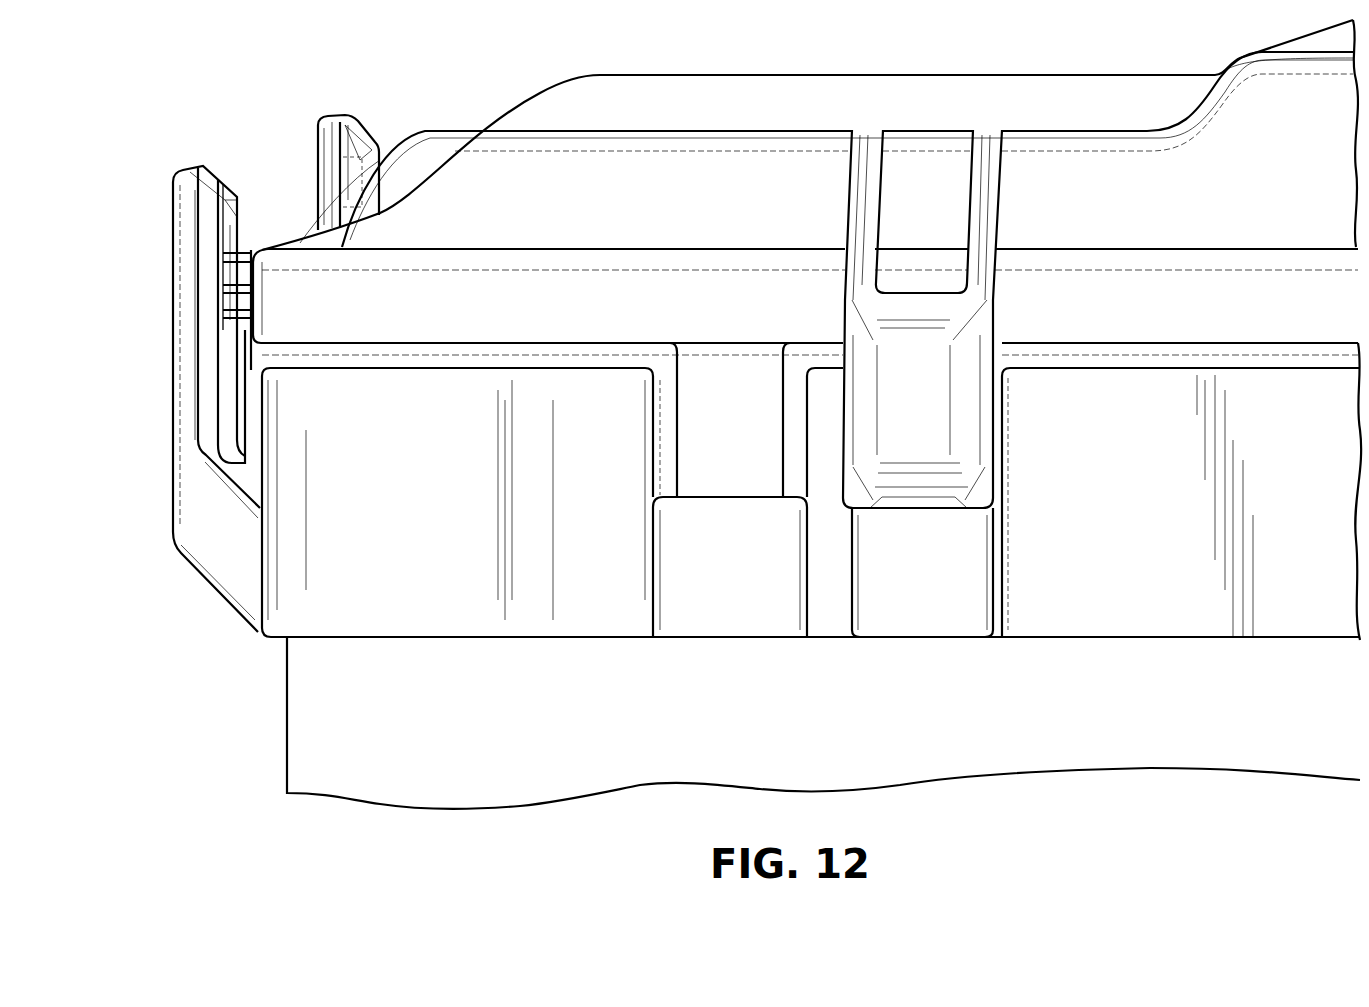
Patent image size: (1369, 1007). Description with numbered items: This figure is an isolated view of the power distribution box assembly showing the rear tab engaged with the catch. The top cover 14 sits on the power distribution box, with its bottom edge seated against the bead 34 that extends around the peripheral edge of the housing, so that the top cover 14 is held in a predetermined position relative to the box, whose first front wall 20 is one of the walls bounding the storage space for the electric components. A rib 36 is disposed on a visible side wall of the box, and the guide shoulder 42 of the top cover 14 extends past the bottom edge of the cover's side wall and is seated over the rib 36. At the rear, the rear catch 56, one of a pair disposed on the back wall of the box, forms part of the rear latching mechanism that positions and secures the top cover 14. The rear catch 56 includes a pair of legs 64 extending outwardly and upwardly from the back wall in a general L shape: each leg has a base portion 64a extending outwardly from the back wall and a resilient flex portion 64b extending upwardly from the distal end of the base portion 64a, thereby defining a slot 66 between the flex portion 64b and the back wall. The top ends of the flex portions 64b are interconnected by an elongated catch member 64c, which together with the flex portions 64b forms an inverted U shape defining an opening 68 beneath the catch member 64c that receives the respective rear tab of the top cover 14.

The top cover 14 is at (1290, 199).
The first front wall 20 is at (1290, 489).
The bead 34 is at (1120, 342).
The rib 36 is at (967, 583).
The guide shoulder 42 is at (968, 427).
The rear catch 56 is at (183, 148).
The legs 64 is at (232, 366).
The base portion 64a is at (227, 563).
The flex portion 64b is at (207, 321).
The catch member 64c is at (217, 187).
The slot 66 is at (237, 436).
The opening 68 is at (233, 220).